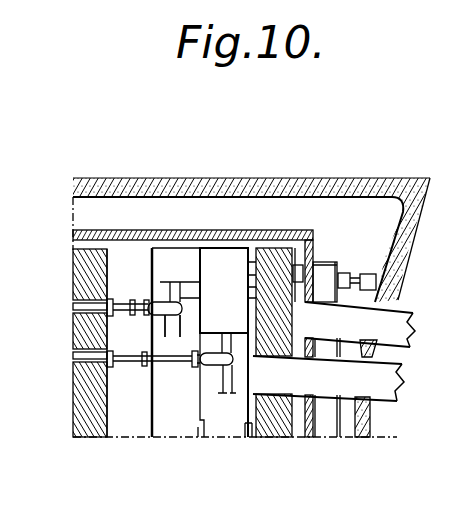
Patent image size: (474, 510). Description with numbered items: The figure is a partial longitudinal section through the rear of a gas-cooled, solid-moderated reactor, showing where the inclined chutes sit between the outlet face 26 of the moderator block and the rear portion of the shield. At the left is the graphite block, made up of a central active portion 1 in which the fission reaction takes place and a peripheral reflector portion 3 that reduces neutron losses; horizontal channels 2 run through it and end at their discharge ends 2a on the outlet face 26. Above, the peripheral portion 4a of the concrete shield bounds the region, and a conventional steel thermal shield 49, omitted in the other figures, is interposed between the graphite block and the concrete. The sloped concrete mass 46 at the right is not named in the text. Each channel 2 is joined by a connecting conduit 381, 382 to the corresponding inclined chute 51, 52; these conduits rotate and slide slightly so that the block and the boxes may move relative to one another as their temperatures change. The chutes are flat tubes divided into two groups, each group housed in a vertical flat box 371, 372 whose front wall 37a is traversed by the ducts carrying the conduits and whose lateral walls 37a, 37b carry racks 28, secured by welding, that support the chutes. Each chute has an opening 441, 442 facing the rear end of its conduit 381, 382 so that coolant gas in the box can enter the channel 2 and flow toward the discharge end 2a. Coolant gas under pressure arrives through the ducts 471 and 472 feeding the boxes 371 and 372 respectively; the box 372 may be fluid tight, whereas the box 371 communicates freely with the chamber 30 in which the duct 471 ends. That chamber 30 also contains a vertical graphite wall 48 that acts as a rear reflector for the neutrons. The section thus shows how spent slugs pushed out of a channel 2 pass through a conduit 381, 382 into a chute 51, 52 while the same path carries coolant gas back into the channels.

The peripheral portion of the shield 4a is at (237, 190).
The side wall 46 is at (395, 255).
The thermal shield 49 is at (310, 242).
The peripheral reflector portion 3 is at (80, 262).
The central active portion 1 is at (80, 327).
The discharge end 2a is at (98, 300).
The channel 2 is at (106, 308).
The outlet face 26 is at (108, 263).
The connecting conduit 381 is at (127, 304).
The connecting conduit 382 is at (128, 356).
The front wall 37a is at (152, 426).
The vertical flat box 371 is at (158, 386).
The vertical flat box 372 is at (208, 400).
The lateral wall 37b is at (199, 440).
The chamber 30 is at (113, 422).
The rack 28 is at (156, 294).
The opening 441 is at (165, 302).
The opening 442 is at (208, 352).
The inclined chute 51 is at (163, 316).
The inclined chute 52 is at (208, 362).
The vertical wall 48 is at (275, 272).
The duct 471 is at (387, 318).
The duct 472 is at (381, 386).